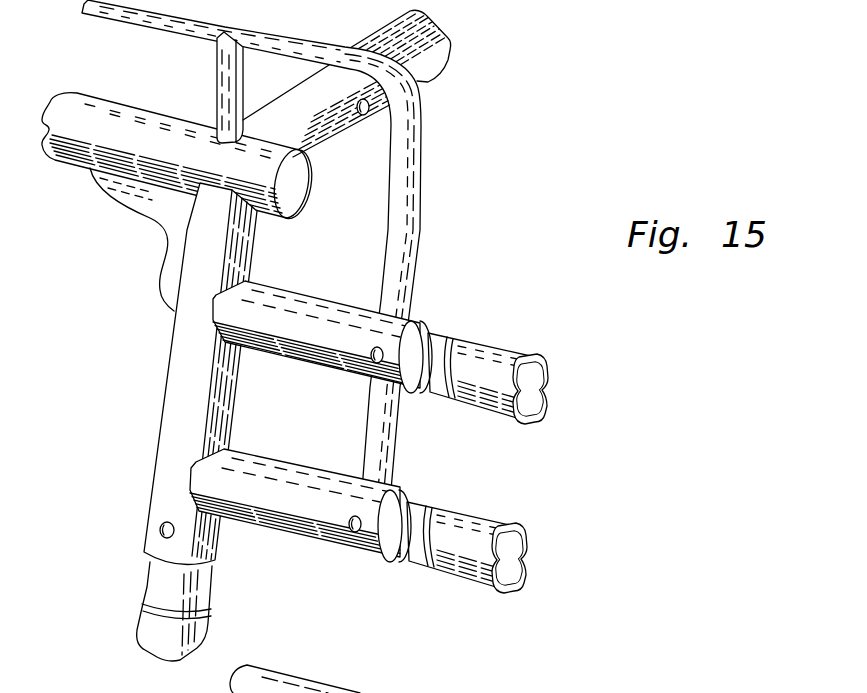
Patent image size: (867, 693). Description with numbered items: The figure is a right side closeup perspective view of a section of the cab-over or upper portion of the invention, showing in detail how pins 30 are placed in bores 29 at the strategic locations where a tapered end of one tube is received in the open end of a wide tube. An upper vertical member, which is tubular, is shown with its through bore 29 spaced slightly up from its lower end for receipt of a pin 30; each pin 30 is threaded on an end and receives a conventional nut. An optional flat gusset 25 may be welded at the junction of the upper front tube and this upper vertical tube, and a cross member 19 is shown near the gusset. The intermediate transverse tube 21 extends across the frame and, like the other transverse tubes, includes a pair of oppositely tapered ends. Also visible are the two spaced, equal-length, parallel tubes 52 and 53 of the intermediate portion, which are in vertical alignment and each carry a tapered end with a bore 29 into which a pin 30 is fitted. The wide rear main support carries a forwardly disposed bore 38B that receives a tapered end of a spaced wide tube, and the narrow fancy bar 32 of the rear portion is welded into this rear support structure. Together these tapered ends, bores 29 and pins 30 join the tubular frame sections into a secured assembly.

The cross rod 19 is at (96, 108).
The intermediate transverse tube 21 is at (430, 83).
The flat gusset 25 is at (158, 217).
The through bore 29 is at (356, 103).
The pin 30 is at (364, 118).
The fancy bar 32 is at (507, 692).
The bore of wide tube 38 38B is at (184, 372).
The tube 52 is at (510, 350).
The tube 53 is at (483, 520).